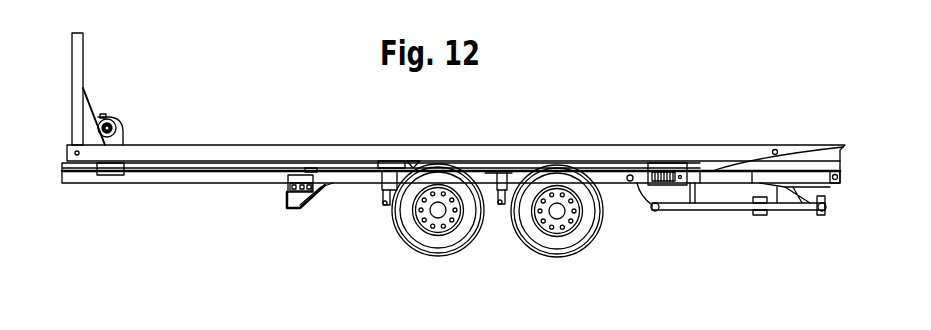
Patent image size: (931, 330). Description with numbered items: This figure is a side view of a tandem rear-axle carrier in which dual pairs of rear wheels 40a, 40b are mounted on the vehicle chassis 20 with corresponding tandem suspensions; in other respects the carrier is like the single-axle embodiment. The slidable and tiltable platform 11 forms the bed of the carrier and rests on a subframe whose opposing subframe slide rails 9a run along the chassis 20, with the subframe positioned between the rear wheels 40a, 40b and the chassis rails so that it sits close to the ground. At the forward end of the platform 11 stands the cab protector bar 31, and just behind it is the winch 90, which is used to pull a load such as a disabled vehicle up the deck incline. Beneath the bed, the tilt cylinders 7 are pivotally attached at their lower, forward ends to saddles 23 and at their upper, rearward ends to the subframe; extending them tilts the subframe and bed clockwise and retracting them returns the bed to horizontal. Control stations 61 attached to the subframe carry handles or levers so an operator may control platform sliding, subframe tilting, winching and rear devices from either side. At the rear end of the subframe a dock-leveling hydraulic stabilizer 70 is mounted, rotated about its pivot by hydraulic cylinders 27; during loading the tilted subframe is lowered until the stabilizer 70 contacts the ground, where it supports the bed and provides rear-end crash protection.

The platform 11 is at (463, 144).
The subframe slide rails 9a is at (312, 150).
The vehicle chassis 20 is at (148, 178).
The cab protector bar 31 is at (84, 46).
The winch 90 is at (122, 117).
The saddles 23 is at (288, 197).
The tilt cylinders 7 is at (323, 190).
The rear wheels 40a is at (428, 252).
The rear wheels 40b is at (546, 253).
The control stations 61 is at (680, 167).
The hydraulic cylinders 27 is at (808, 190).
The hydraulic stabilizer 70 is at (812, 216).